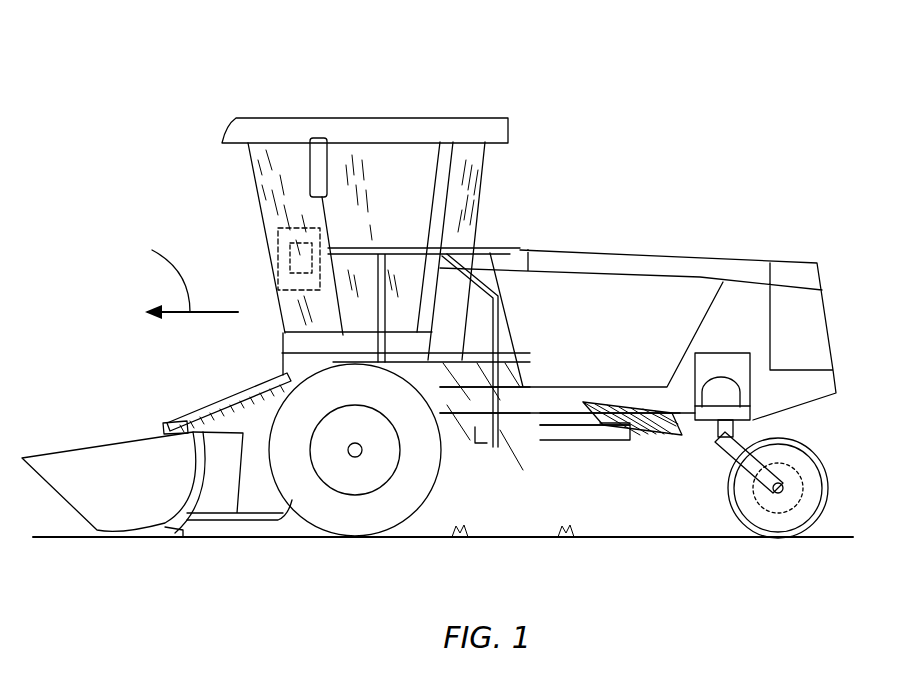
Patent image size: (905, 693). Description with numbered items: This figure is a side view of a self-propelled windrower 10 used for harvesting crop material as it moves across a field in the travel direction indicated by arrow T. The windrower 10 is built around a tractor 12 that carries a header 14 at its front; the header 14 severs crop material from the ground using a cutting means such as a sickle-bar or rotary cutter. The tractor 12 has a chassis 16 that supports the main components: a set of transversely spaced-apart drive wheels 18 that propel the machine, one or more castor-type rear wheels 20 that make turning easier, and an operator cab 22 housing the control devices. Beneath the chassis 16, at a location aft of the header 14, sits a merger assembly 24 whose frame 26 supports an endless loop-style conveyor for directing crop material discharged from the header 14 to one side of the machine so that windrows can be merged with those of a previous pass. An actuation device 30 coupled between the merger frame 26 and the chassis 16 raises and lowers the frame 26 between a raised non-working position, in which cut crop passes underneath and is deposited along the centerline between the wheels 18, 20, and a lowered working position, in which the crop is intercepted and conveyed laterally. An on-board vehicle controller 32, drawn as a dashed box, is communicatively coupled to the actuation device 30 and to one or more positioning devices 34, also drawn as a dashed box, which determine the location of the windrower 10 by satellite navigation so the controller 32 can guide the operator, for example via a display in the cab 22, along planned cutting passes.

The self-propelled windrower 10 is at (110, 98).
The tractor 12 is at (615, 250).
The header 14 is at (112, 463).
The chassis 16 is at (448, 400).
The drive wheels 18 is at (352, 518).
The rear wheels 20 is at (817, 476).
The operator cab 22 is at (390, 160).
The merger assembly 24 is at (630, 472).
The frame 26 is at (563, 435).
The actuation device 30 is at (653, 437).
The vehicle controller 32 is at (267, 260).
The positioning device 34 is at (275, 267).
The travel direction T is at (184, 279).